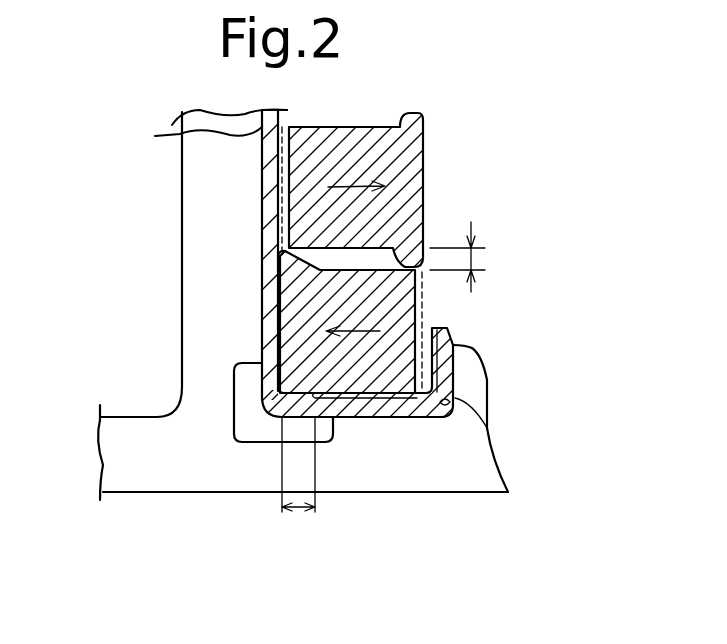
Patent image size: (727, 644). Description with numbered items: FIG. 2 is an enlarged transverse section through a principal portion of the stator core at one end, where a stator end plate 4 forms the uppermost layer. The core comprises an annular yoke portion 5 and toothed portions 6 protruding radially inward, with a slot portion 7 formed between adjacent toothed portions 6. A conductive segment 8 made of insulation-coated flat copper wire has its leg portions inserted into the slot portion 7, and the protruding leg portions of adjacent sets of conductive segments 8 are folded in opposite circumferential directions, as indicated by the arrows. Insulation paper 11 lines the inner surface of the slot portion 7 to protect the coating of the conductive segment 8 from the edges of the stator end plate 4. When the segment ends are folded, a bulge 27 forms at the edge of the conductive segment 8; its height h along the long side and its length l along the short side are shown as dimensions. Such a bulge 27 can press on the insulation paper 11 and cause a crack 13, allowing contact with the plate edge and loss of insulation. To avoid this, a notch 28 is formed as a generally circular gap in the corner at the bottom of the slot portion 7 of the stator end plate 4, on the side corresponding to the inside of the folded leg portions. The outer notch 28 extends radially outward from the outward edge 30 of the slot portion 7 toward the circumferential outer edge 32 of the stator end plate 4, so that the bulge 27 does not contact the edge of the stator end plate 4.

The stator end plate 4 is at (330, 305).
The annular yoke portion 5 is at (130, 433).
The toothed portion 6 is at (213, 205).
The insulation paper 11 is at (210, 129).
The bulge 27 is at (280, 272).
The notch 28 is at (228, 387).
The conductive segment 8 is at (407, 145).
The outward edge 30 is at (380, 371).
The slot portion 7 is at (488, 428).
The crack 13 is at (277, 427).
The circumferential outer edge 32 is at (407, 492).
The height of bulge h is at (468, 257).
The length of bulge l is at (298, 520).